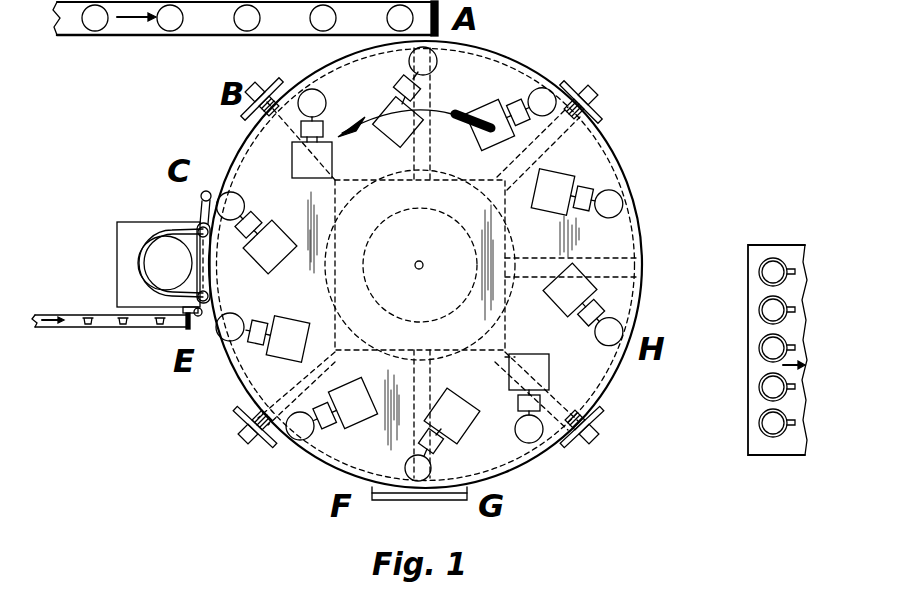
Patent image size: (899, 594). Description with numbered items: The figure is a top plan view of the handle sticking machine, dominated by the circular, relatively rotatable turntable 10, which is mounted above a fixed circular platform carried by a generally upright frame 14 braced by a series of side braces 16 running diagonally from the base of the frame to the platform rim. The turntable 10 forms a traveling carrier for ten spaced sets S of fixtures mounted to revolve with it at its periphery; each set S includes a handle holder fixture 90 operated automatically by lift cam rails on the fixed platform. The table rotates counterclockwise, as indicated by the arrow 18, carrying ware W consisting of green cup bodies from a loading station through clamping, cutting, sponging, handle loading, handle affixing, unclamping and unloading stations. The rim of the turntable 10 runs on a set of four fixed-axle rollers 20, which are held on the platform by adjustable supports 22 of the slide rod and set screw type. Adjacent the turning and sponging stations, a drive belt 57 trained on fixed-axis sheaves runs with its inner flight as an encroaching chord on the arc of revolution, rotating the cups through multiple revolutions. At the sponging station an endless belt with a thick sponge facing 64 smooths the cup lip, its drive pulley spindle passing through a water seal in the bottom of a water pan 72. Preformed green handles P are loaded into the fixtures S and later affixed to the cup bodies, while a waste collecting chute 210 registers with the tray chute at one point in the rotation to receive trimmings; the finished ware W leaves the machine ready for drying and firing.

The turntable 10 is at (626, 168).
The upright frame 14 is at (487, 353).
The side braces 16 is at (553, 407).
The arrow 18 is at (377, 120).
The rollers 20 is at (237, 403).
The adjustable supports 22 is at (258, 90).
The drive belt 57 is at (201, 196).
The sponge facing 64 is at (165, 231).
The water pan 72 is at (117, 255).
The handle holder fixture 90 is at (297, 316).
The waste collecting chute 210 is at (438, 501).
The preformed green handles P is at (90, 315).
The sets of fixtures S is at (234, 314).
The ware W is at (757, 300).